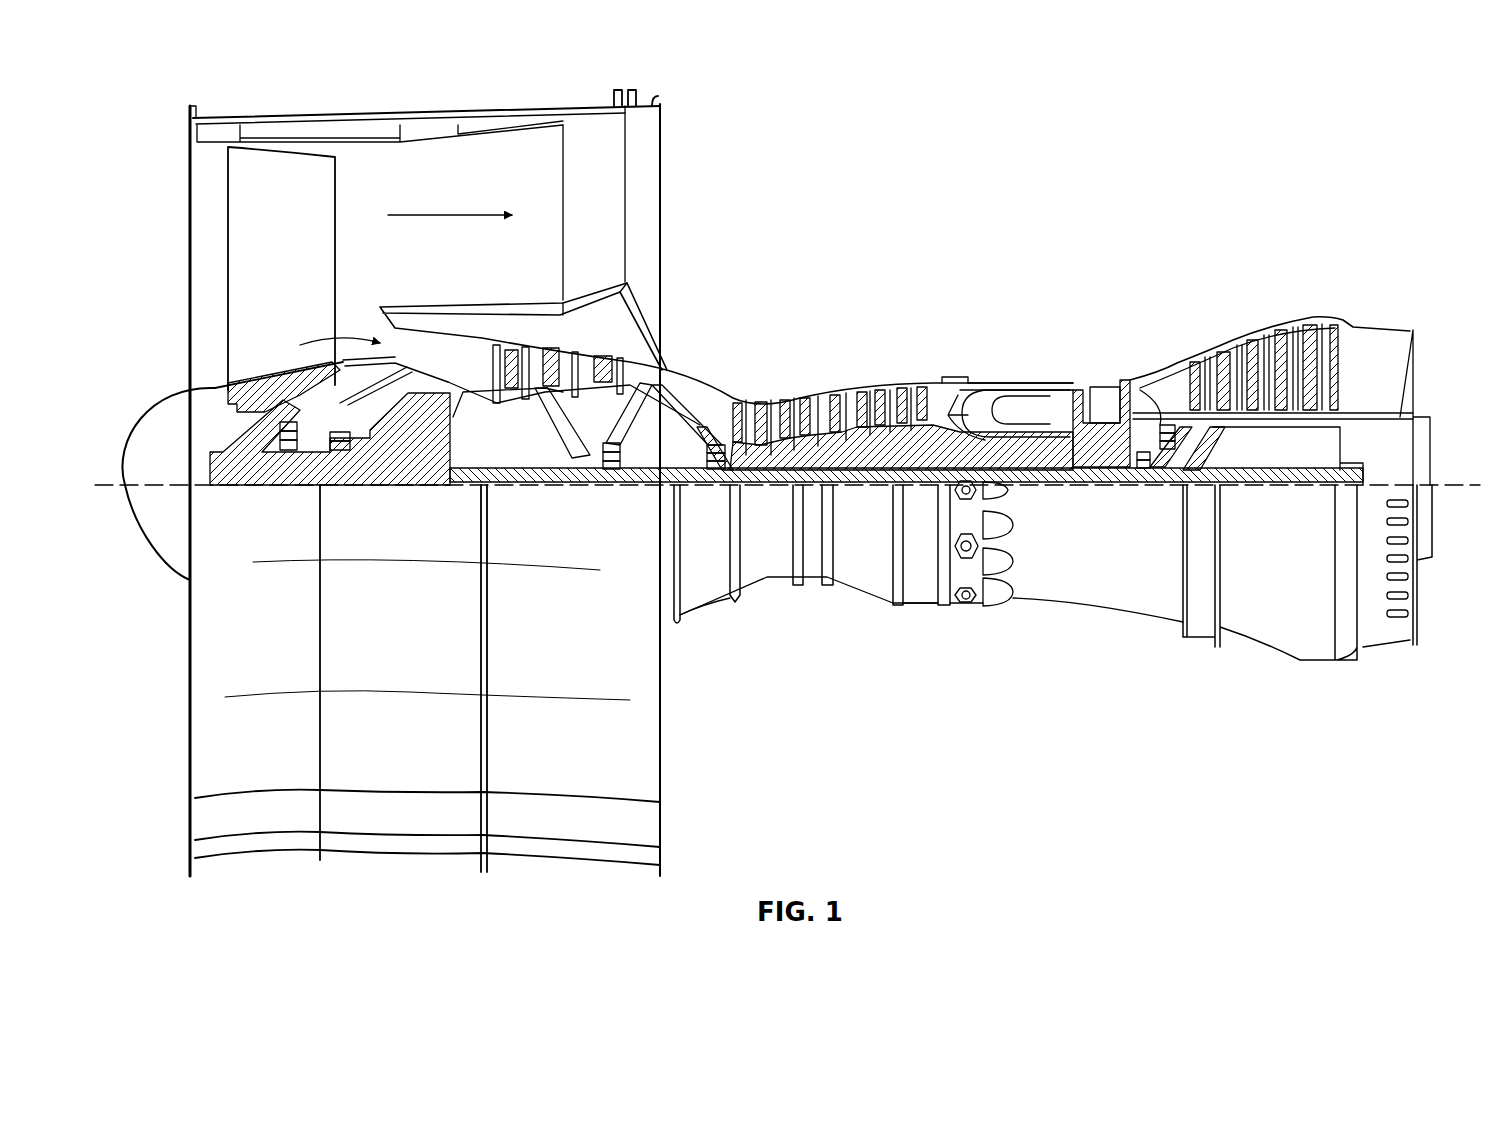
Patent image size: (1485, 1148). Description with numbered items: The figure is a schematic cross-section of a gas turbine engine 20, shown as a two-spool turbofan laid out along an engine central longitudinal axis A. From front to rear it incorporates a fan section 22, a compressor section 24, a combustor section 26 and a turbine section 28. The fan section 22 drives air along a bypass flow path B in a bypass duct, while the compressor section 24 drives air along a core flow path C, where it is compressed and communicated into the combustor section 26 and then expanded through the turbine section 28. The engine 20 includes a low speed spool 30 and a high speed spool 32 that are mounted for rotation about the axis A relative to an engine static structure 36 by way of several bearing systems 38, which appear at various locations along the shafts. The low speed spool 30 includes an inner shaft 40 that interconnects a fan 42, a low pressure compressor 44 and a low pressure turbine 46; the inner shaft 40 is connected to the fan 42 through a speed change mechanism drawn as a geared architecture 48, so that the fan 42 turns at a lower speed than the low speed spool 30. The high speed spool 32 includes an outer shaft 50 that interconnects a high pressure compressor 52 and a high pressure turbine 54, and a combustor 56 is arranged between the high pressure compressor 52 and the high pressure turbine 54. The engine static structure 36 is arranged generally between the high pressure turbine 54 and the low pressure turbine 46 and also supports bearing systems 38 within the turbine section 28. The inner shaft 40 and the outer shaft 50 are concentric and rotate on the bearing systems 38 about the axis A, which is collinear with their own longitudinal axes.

The gas turbine engine 20 is at (1237, 152).
The fan section 22 is at (292, 108).
The compressor section 24 is at (853, 345).
The combustor section 26 is at (1012, 348).
The turbine section 28 is at (1168, 325).
The low speed spool 30 is at (885, 489).
The high speed spool 32 is at (940, 435).
The engine static structure 36 is at (923, 604).
The bearing systems 38 is at (290, 452).
The inner shaft 40 is at (678, 488).
The fan 42 is at (310, 248).
The low pressure compressor 44 is at (580, 360).
The low pressure turbine 46 is at (1270, 340).
The geared architecture 48 is at (427, 450).
The outer shaft 50 is at (1045, 478).
The high pressure compressor 52 is at (838, 440).
The high pressure turbine 54 is at (1110, 382).
The combustor 56 is at (1033, 400).
The engine central longitudinal axis A is at (1444, 480).
The bypass flow path B is at (453, 208).
The core flow path C is at (315, 340).